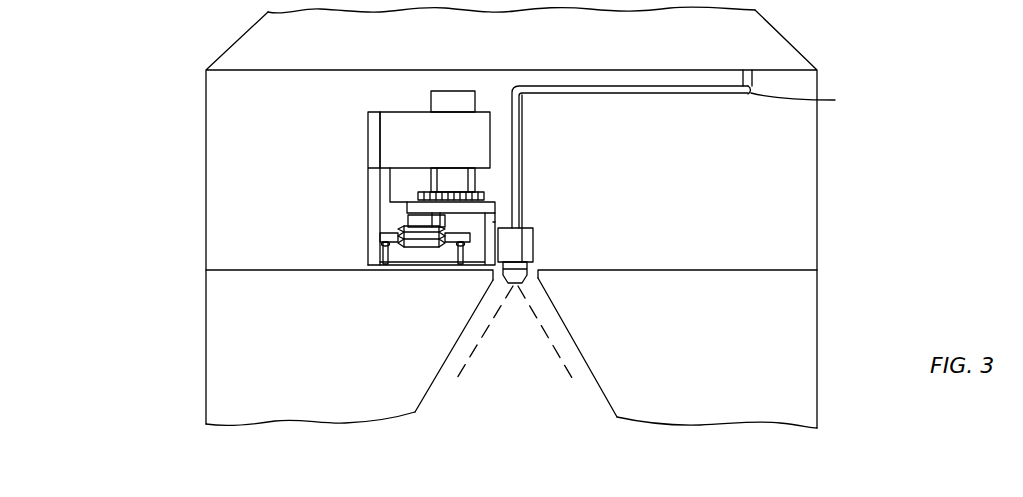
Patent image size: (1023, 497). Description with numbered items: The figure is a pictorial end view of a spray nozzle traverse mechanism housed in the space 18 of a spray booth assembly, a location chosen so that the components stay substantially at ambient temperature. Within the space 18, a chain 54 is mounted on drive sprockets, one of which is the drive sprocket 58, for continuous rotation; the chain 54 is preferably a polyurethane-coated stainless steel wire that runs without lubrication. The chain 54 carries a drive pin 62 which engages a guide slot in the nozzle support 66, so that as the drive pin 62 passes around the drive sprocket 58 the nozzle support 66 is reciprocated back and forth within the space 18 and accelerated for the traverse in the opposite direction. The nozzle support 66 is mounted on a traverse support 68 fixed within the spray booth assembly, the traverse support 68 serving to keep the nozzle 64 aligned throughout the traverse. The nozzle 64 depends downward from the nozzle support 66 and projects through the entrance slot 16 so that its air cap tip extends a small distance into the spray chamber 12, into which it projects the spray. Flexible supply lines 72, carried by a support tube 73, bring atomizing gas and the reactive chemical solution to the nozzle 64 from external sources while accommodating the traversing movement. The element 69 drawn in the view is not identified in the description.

The spray chamber 12 is at (523, 406).
The entrance slot 16 is at (533, 285).
The space 18 is at (247, 158).
The chain 54 is at (486, 194).
The drive sprocket 58 is at (477, 177).
The drive pin 62 is at (407, 201).
The nozzle 64 is at (523, 250).
The nozzle support 66 is at (493, 222).
The traverse support 68 is at (392, 235).
The coupling 69 is at (403, 247).
The supply line 72 is at (634, 94).
The support tube 73 is at (835, 100).